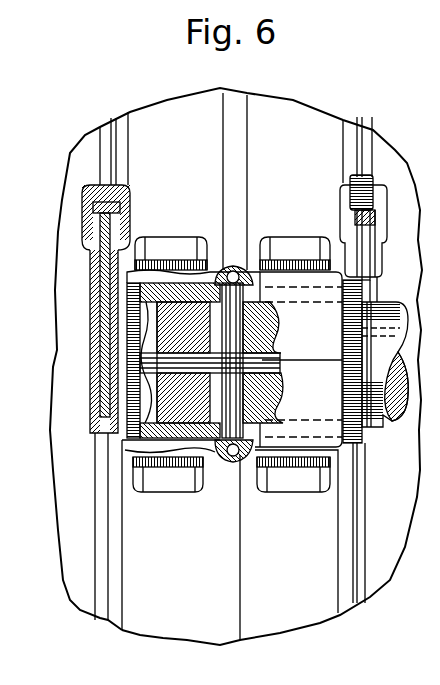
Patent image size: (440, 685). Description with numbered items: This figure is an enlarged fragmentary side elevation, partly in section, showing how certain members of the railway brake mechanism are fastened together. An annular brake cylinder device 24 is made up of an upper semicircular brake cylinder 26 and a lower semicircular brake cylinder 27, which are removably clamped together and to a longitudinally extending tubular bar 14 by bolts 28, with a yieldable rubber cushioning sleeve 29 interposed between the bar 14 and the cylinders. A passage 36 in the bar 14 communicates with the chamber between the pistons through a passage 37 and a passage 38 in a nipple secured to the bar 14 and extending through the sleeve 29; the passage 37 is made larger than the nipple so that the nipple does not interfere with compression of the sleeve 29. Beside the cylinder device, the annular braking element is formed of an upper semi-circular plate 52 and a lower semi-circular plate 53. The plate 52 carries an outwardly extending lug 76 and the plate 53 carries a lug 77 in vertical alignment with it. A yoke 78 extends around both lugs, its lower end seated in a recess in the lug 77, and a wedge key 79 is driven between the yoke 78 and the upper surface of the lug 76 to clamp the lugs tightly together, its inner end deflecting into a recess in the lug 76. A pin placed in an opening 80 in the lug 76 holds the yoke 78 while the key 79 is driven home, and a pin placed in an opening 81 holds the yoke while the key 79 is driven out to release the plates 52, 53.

The longitudinally extending bar 14 is at (392, 407).
The annular brake cylinder device 24 is at (292, 110).
The upper semicircular brake cylinder 26 is at (325, 120).
The lower semicircular brake cylinder 27 is at (163, 632).
The bolt 28 is at (182, 248).
The cushioning sleeve 29 is at (357, 282).
The passage 36 is at (397, 363).
The passage 37 is at (238, 280).
The passage 38 is at (238, 332).
The upper semi-circular plate 52 is at (107, 133).
The lower semi-circular plate 53 is at (102, 615).
The lug 76 is at (107, 290).
The lug 77 is at (103, 385).
The yoke 78 is at (93, 268).
The wedge key 79 is at (130, 197).
The opening 80 is at (112, 218).
The opening 81 is at (367, 220).